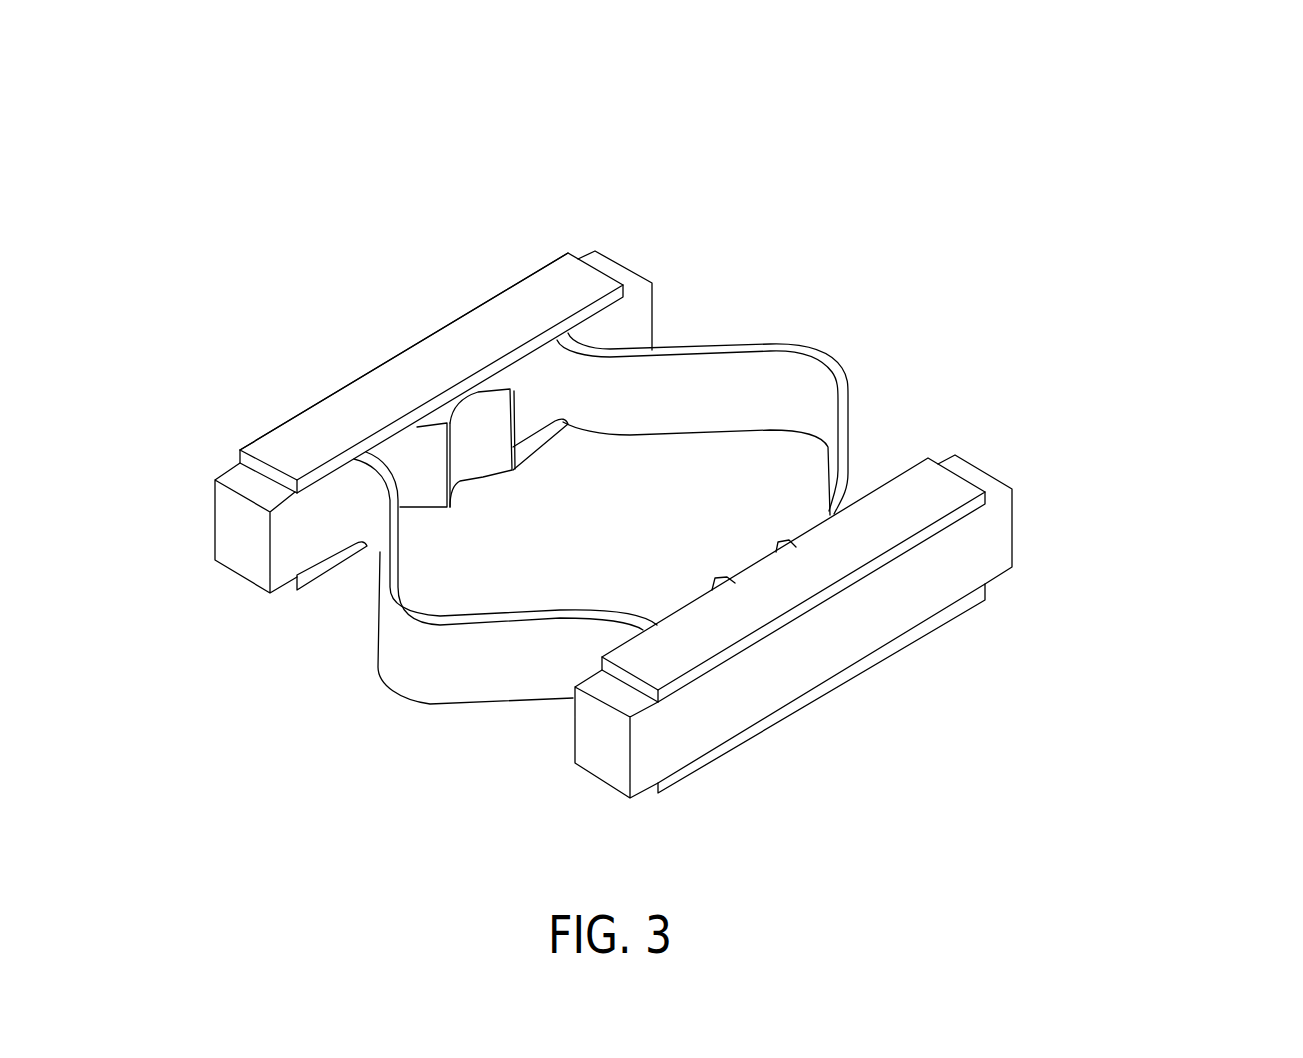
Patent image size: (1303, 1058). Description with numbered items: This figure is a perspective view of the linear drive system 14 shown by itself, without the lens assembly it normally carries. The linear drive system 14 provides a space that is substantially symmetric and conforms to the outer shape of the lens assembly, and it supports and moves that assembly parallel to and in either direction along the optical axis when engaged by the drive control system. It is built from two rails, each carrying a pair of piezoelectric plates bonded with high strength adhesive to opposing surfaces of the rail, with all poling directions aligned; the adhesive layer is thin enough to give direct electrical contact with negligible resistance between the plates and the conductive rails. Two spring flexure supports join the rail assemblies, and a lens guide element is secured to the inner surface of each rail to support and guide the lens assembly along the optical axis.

The linear drive system 14 is at (317, 403).